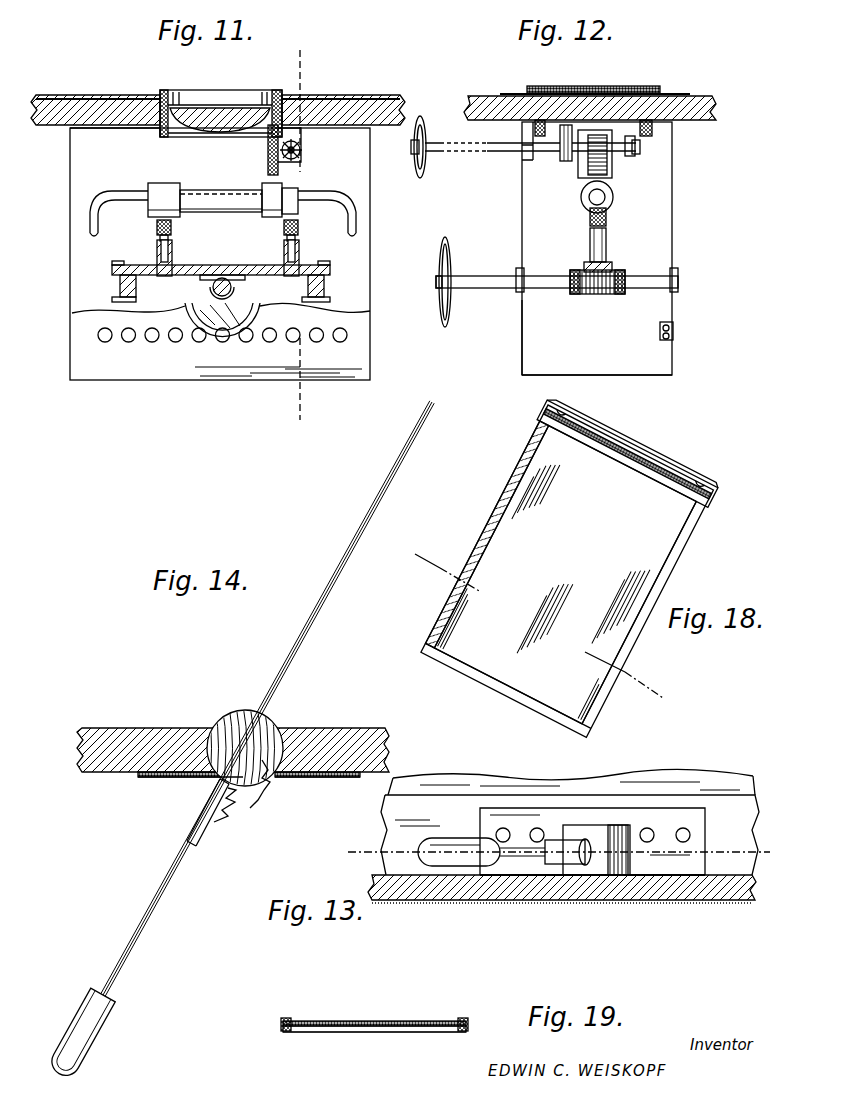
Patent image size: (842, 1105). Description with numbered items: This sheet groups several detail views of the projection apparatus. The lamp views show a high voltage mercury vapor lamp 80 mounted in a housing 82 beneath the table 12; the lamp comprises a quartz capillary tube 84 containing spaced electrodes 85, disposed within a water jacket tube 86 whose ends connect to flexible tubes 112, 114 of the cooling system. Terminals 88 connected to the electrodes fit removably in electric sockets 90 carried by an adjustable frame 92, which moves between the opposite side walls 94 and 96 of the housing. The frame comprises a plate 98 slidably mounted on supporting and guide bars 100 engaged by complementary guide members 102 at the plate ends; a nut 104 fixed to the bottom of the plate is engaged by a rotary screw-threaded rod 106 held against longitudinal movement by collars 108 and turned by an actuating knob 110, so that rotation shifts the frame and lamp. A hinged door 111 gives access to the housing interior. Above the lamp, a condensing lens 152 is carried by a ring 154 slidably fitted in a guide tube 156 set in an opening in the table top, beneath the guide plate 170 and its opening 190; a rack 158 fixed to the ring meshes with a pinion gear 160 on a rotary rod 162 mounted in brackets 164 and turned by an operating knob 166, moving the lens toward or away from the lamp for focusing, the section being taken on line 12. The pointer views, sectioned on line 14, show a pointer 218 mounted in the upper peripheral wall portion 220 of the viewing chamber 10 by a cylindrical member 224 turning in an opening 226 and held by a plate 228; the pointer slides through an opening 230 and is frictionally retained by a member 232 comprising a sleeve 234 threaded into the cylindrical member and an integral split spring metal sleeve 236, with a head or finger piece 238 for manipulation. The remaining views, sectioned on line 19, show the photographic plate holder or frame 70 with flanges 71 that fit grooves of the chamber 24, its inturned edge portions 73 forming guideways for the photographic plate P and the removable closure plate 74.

In FIG. 13, the viewing chamber 10 is at (698, 903).
In FIG. 11, the table 12 is at (306, 70).
In FIG. 12, the table 12 is at (706, 123).
In FIG. 13, the section line 14 is at (362, 850).
In FIG. 18, the section line 19 is at (436, 556).
In FIG. 13, the chamber 24 is at (702, 779).
In FIG. 18, the photographic plate holder or frame 70 is at (568, 568).
In FIG. 18, the flanges 71 is at (446, 599).
In FIG. 19, the flanges 71 is at (283, 1029).
In FIG. 19, the inturned edge portions 73 is at (290, 1017).
In FIG. 19, the closure plate 74 is at (326, 1021).
In FIG. 11, the high voltage mercury vapor lamp 80 is at (223, 198).
In FIG. 12, the high voltage mercury vapor lamp 80 is at (620, 200).
In FIG. 11, the housing 82 is at (372, 345).
In FIG. 12, the housing 82 is at (677, 341).
In FIG. 11, the quartz capillary tube 84 is at (222, 206).
In FIG. 11, the electrodes 85 is at (187, 184).
In FIG. 11, the water jacket tube 86 is at (197, 188).
In FIG. 11, the terminals 88 is at (157, 230).
In FIG. 12, the terminals 88 is at (607, 227).
In FIG. 11, the electric sockets 90 is at (157, 252).
In FIG. 12, the electric sockets 90 is at (607, 250).
In FIG. 11, the adjustable frame 92 is at (253, 277).
In FIG. 11, the side wall 94 is at (186, 362).
In FIG. 12, the side wall 94 is at (522, 330).
In FIG. 12, the side wall 96 is at (674, 309).
In FIG. 11, the plate 98 is at (184, 266).
In FIG. 12, the plate 98 is at (613, 266).
In FIG. 11, the supporting and guide bars 100 is at (120, 287).
In FIG. 11, the guide members 102 is at (126, 300).
In FIG. 11, the nut 104 is at (212, 287).
In FIG. 12, the nut 104 is at (603, 293).
In FIG. 12, the screw-threaded rod 106 is at (560, 283).
In FIG. 12, the collars 108 is at (518, 271).
In FIG. 12, the actuating knob 110 is at (456, 250).
In FIG. 12, the hinged door 111 is at (650, 365).
In FIG. 11, the flexible tube 112 is at (357, 204).
In FIG. 11, the flexible tube 114 is at (82, 223).
In FIG. 11, the condensing lens 152 is at (239, 109).
In FIG. 11, the ring 154 is at (174, 140).
In FIG. 11, the guide tube 156 is at (218, 96).
In FIG. 12, the guide tube 156 is at (650, 134).
In FIG. 11, the rack 158 is at (281, 171).
In FIG. 12, the rack 158 is at (613, 170).
In FIG. 11, the pinion gear 160 is at (303, 150).
In FIG. 12, the pinion gear 160 is at (590, 155).
In FIG. 12, the rotary rod 162 is at (520, 151).
In FIG. 12, the brackets 164 is at (560, 135).
In FIG. 12, the operating knob 166 is at (425, 121).
In FIG. 11, the guide plate 170 is at (96, 94).
In FIG. 11, the opening 190 is at (208, 92).
In FIG. 14, the pointer 218 is at (240, 741).
In FIG. 13, the pointer 218 is at (529, 862).
In FIG. 14, the upper peripheral wall portion 220 is at (99, 740).
In FIG. 13, the upper peripheral wall portion 220 is at (403, 820).
In FIG. 14, the cylindrical member 224 is at (268, 735).
In FIG. 13, the cylindrical member 224 is at (610, 877).
In FIG. 14, the opening 226 is at (192, 770).
In FIG. 14, the plate 228 is at (322, 777).
In FIG. 13, the plate 228 is at (661, 855).
In FIG. 14, the opening 230 is at (275, 720).
In FIG. 14, the member 232 is at (233, 810).
In FIG. 14, the sleeve 234 is at (252, 792).
In FIG. 14, the split spring metal sleeve 236 is at (207, 808).
In FIG. 13, the split spring metal sleeve 236 is at (565, 863).
In FIG. 14, the head or finger piece 238 is at (118, 1030).
In FIG. 19, the photographic plate P is at (348, 1032).